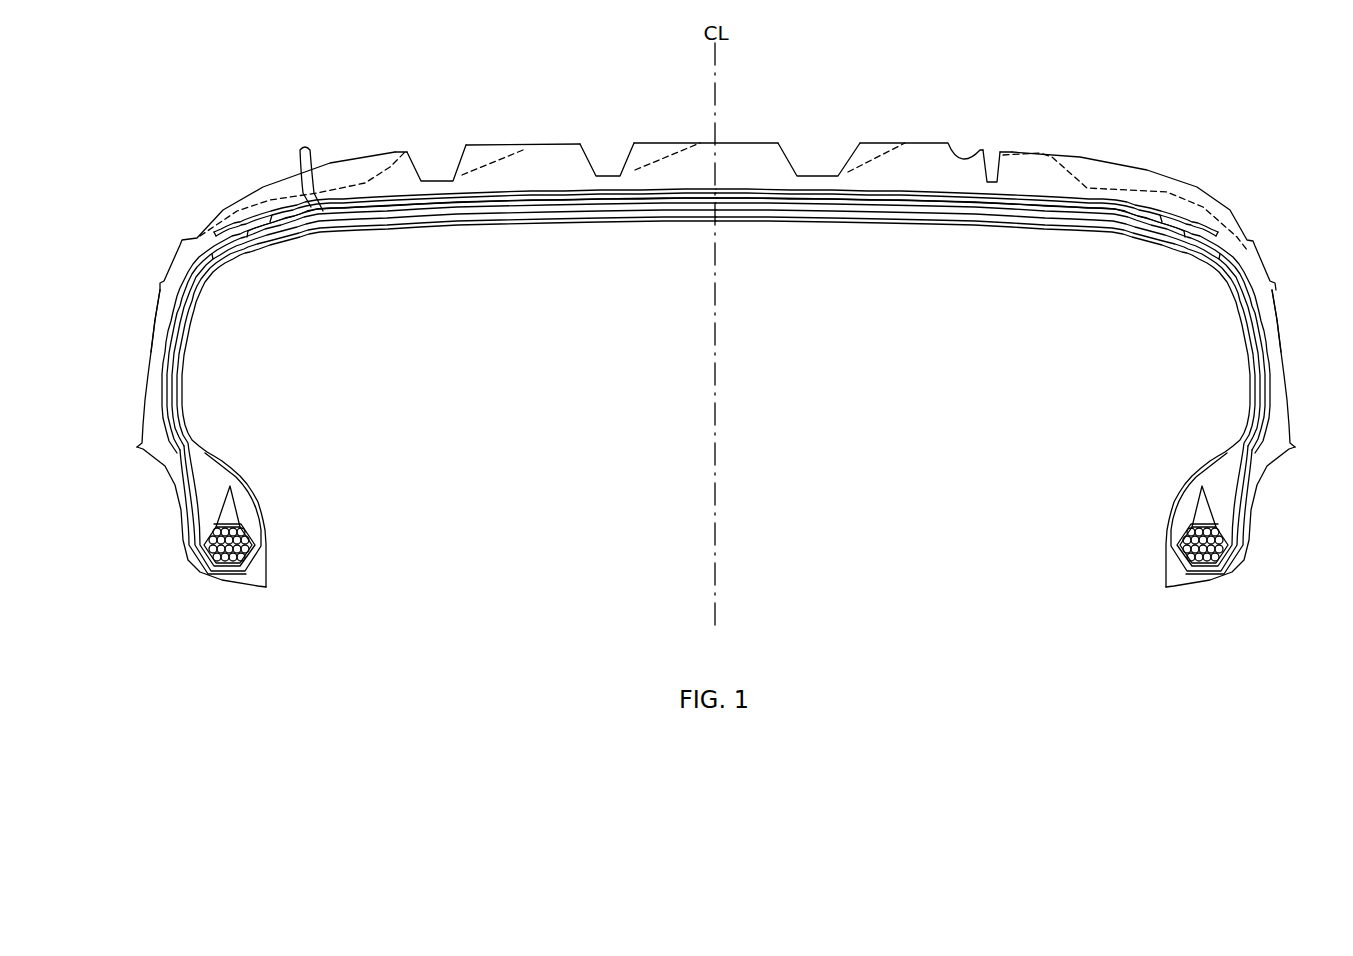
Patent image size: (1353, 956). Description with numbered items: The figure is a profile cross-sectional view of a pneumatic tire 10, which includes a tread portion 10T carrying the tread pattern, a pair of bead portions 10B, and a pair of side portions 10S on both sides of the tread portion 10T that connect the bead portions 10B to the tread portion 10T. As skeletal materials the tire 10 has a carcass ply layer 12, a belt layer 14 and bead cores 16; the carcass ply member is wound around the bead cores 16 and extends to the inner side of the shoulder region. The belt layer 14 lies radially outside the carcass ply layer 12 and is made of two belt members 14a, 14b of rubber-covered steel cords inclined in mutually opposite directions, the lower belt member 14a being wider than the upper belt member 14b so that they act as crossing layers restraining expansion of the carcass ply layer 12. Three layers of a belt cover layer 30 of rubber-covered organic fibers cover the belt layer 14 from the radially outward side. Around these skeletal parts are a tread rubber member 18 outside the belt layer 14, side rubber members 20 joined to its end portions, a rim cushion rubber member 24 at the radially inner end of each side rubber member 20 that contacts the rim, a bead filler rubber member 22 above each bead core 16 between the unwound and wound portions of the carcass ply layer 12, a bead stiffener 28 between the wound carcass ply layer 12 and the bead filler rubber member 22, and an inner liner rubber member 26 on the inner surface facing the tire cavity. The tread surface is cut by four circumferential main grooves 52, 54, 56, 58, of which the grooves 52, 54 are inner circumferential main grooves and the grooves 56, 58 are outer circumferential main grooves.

The tire 10 is at (1148, 128).
The tread portion 10T is at (752, 127).
The side portion 10S is at (146, 306).
The bead portion 10B is at (188, 562).
The carcass ply layer 12 is at (1198, 257).
The belt layer 14 is at (716, 145).
The belt member 14a is at (935, 208).
The belt member 14b is at (885, 196).
The bead core 16 is at (228, 560).
The tread rubber member 18 is at (294, 186).
The side rubber member 20 is at (158, 352).
The bead filler rubber member 22 is at (220, 510).
The rim cushion rubber member 24 is at (174, 457).
The inner liner rubber member 26 is at (197, 302).
The bead stiffener 28 is at (200, 491).
The belt cover layer 30 is at (304, 168).
The circumferential main groove 52 is at (616, 163).
The circumferential main groove 54 is at (816, 163).
The circumferential main groove 56 is at (441, 164).
The circumferential main groove 58 is at (995, 152).